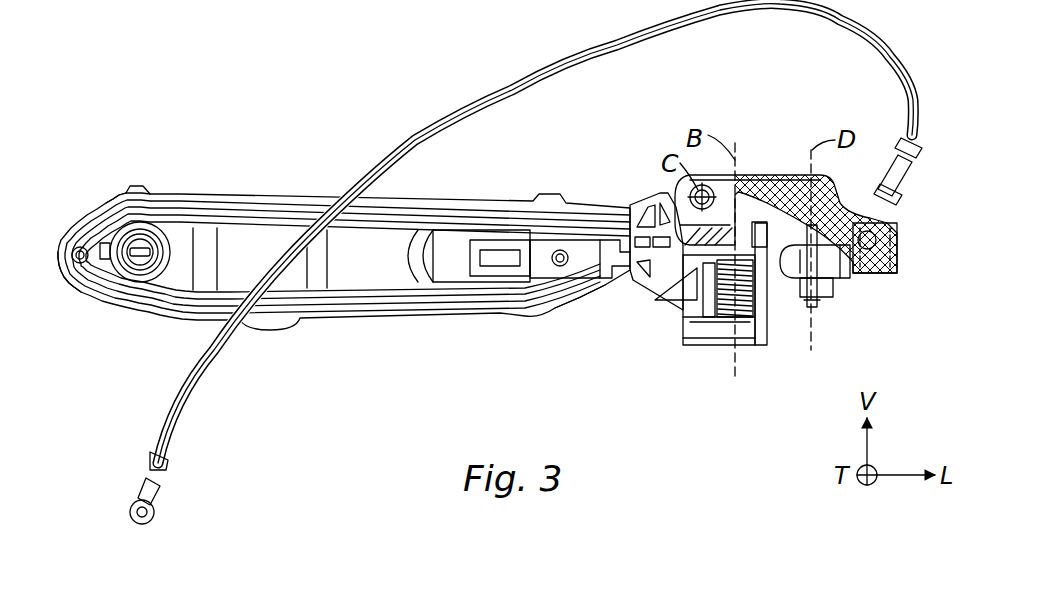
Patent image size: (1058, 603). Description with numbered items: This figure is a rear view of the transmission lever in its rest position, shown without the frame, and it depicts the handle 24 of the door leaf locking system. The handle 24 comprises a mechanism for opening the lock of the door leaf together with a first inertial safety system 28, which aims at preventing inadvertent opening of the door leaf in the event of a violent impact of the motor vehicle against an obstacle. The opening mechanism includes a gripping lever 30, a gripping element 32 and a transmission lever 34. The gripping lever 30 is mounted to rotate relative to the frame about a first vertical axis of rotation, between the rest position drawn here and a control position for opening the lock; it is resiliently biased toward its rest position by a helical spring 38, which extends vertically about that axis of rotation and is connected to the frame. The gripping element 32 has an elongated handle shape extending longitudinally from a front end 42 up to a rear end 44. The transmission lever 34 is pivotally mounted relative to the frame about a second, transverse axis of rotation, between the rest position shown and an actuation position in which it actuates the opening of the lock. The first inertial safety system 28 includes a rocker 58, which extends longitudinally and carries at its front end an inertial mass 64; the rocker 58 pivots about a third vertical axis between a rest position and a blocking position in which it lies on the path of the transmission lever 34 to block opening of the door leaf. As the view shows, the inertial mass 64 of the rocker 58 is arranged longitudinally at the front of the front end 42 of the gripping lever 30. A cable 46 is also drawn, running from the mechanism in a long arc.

The handle 24 is at (105, 142).
The first inertial safety system 28 is at (818, 316).
The gripping lever 30 is at (650, 195).
The gripping element 32 is at (367, 270).
The transmission lever 34 is at (752, 163).
The helical spring 38 is at (757, 313).
The front end 42 is at (595, 288).
The rear end 44 is at (92, 285).
The cable 46 is at (520, 90).
The rocker 58 is at (826, 300).
The inertial mass 64 is at (847, 282).